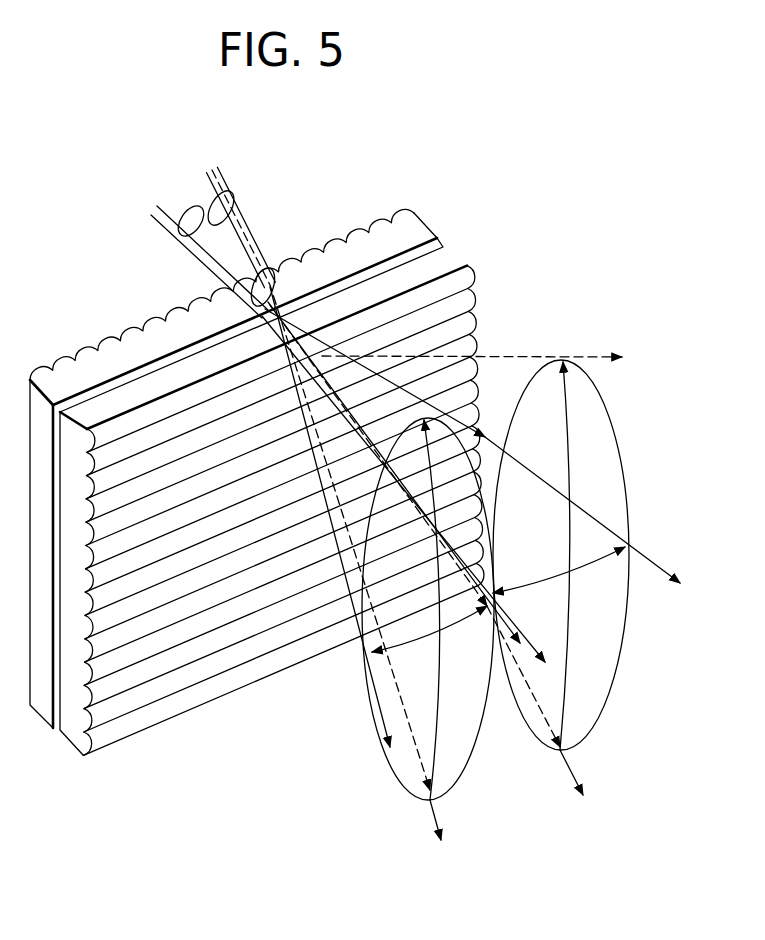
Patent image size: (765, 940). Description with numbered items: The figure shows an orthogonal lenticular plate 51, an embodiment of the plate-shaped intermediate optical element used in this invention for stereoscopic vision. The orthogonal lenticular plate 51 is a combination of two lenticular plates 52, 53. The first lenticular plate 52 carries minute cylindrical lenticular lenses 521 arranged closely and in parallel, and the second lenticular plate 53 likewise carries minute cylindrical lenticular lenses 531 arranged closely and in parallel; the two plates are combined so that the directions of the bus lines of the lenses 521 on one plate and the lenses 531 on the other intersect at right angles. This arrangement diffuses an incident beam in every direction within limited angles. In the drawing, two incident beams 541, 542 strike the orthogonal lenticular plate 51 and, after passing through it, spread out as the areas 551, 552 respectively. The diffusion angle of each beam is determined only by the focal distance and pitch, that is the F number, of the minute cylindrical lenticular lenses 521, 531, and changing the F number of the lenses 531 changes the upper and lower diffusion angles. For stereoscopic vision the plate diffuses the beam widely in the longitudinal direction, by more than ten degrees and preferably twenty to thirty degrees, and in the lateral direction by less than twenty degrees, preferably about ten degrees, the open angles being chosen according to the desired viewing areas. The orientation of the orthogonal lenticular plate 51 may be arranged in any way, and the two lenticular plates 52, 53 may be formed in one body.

The orthogonal lenticular plate 51 is at (289, 457).
The lenticular plate 52 is at (251, 457).
The minute cylindrical lenticular lenses 521 is at (378, 232).
The lenticular plate 53 is at (298, 494).
The minute cylindrical lenticular lenses 531 is at (463, 283).
The incident beam 541 is at (157, 211).
The incident beam 542 is at (207, 187).
The diffused area 551 is at (617, 413).
The diffused area 552 is at (458, 738).